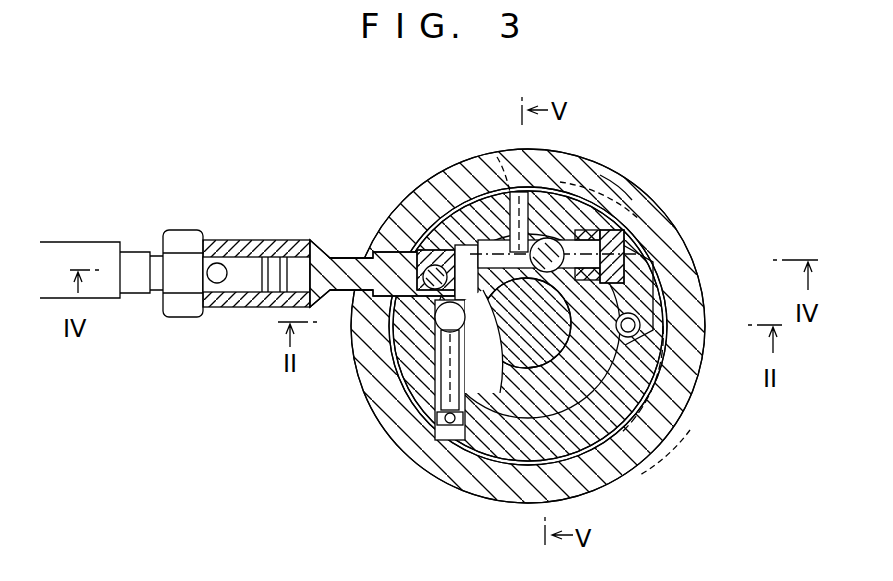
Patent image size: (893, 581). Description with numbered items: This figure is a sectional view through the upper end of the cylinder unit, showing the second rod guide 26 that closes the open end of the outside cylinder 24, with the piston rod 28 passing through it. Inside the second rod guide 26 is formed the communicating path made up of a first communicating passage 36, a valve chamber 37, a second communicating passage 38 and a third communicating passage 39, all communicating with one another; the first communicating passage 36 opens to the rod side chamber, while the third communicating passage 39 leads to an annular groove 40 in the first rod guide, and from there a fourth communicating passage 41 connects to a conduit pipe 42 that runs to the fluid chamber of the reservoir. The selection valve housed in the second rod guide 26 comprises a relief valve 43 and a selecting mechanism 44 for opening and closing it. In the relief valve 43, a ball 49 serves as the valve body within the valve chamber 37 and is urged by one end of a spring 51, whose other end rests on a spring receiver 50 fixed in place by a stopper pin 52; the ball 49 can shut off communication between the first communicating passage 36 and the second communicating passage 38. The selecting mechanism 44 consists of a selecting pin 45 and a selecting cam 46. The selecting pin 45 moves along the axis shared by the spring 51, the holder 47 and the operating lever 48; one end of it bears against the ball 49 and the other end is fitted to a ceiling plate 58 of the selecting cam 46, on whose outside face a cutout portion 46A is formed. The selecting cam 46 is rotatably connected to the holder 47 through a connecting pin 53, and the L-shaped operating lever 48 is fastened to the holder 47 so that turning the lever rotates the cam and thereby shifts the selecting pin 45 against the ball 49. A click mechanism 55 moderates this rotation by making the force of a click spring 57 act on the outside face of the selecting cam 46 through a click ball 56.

The outside cylinder 24 is at (675, 240).
The second rod guide 26 is at (518, 445).
The piston rod 28 is at (620, 472).
The first communicating passage 36 is at (610, 205).
The valve chamber 37 is at (655, 300).
The second communicating passage 38 is at (520, 192).
The third communicating passage 39 is at (500, 160).
The annular groove 40 is at (660, 430).
The fourth communicating passage 41 is at (640, 330).
The conduit pipe 42 is at (655, 370).
The relief valve 43 is at (620, 222).
The selecting mechanism 44 is at (384, 194).
The selecting pin 45 is at (444, 209).
The selecting cam 46 is at (355, 245).
The cutout portion 46A is at (437, 262).
The holder 47 is at (222, 240).
The operating lever 48 is at (105, 242).
The ball 49 is at (615, 180).
The spring receiver 50 is at (565, 255).
The spring 51 is at (663, 213).
The stopper pin 52 is at (620, 270).
The connecting pin 53 is at (348, 258).
The click mechanism 55 is at (379, 418).
The click ball 56 is at (437, 320).
The click spring 57 is at (440, 380).
The ceiling plate 58 is at (470, 440).